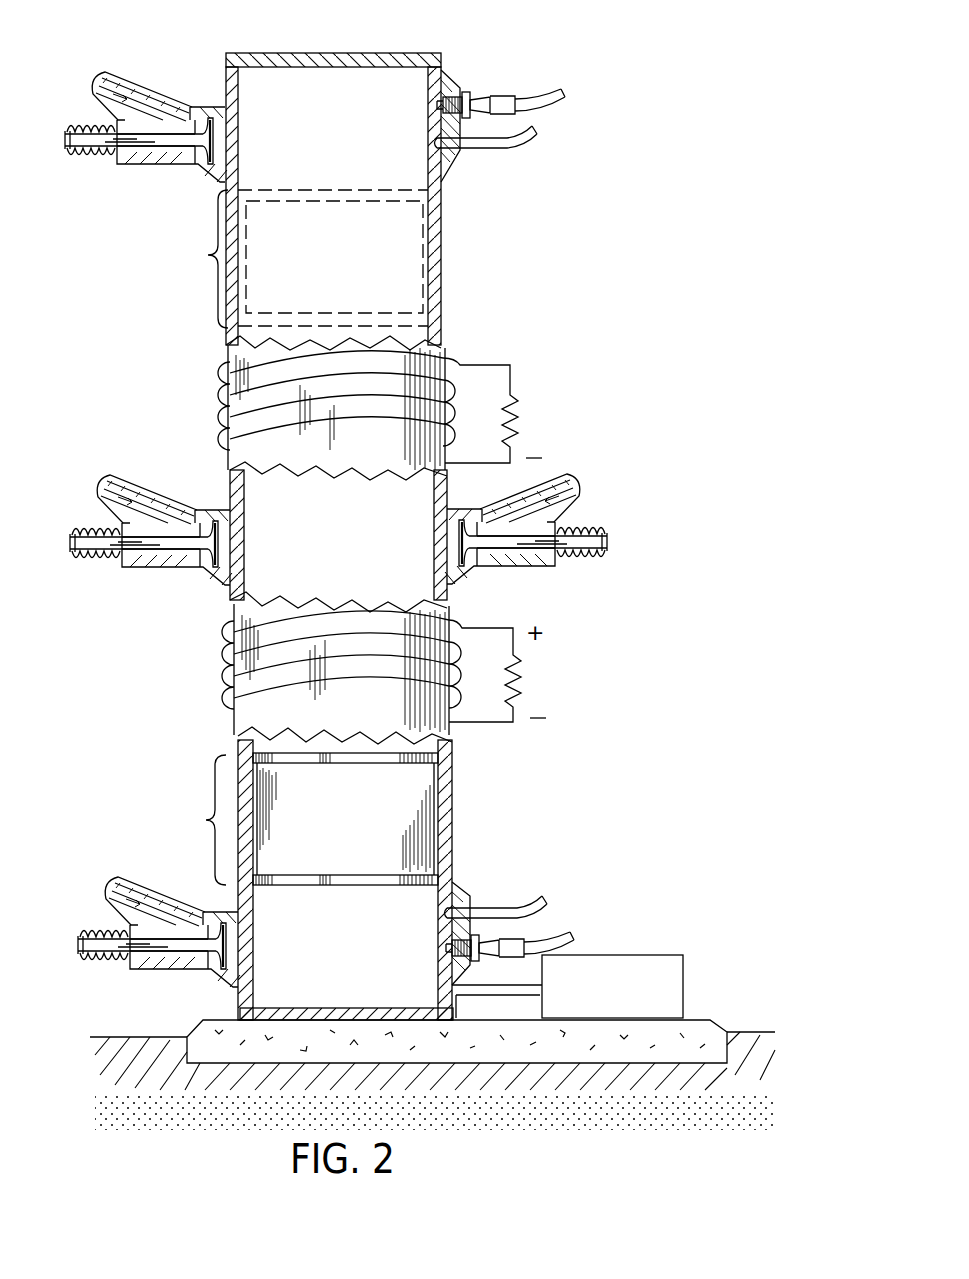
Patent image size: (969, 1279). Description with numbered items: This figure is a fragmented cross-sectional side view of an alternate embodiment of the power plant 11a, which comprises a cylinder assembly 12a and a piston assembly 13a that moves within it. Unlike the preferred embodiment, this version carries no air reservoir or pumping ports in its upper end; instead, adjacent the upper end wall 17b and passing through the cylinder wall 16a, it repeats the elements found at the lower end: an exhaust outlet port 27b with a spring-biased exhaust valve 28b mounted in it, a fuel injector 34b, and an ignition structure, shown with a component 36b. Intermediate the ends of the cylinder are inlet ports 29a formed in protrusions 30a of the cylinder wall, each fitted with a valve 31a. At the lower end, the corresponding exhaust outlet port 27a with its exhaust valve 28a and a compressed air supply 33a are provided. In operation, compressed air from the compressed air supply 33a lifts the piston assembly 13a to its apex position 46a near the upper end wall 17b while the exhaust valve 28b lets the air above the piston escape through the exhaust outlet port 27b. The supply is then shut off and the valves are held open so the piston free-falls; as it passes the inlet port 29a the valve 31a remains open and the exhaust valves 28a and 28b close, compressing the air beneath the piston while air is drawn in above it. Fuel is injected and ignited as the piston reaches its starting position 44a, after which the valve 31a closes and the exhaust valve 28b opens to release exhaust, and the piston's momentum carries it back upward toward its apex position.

The power plant 11a is at (540, 408).
The cylinder assembly 12a is at (464, 268).
The piston assembly 13a is at (392, 830).
The cylinder wall 16a is at (437, 212).
The upper end wall 17b is at (375, 60).
The exhaust outlet port 27a is at (243, 933).
The exhaust outlet port 27b is at (225, 120).
The exhaust valve 28a is at (134, 886).
The exhaust valve 28b is at (112, 82).
The inlet port 29a is at (225, 556).
The protrusion 30a is at (205, 500).
The valve 31a is at (142, 572).
The compressed air supply 33a is at (631, 954).
The fuel injector 34b is at (512, 144).
The spark plug 36b is at (470, 94).
The starting position 44a is at (208, 880).
The apex position 46a is at (289, 259).